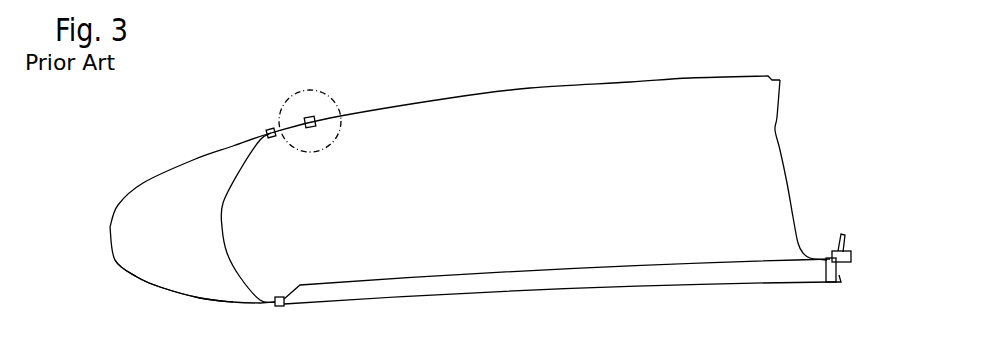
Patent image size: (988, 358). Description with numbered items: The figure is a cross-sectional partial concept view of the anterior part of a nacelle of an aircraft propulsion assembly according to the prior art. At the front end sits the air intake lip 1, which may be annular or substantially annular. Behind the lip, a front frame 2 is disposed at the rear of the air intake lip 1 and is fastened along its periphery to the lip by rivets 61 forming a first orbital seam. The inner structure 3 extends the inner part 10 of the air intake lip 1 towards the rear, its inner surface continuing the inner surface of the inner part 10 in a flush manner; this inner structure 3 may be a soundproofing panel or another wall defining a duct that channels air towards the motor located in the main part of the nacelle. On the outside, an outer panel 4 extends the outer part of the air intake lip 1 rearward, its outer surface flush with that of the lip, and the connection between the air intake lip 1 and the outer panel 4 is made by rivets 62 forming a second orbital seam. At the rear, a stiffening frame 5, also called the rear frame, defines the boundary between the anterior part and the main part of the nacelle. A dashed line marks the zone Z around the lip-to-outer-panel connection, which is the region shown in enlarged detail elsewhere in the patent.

The air intake lip 1 is at (115, 258).
The inner part of the air intake lip 10 is at (198, 297).
The front frame 2 is at (223, 227).
The inner structure 3 is at (500, 285).
The outer panel 4 is at (347, 115).
The stiffening frame 5 is at (783, 160).
The rivets 61 is at (268, 129).
The rivets 62 is at (308, 116).
The zone Z is at (337, 141).